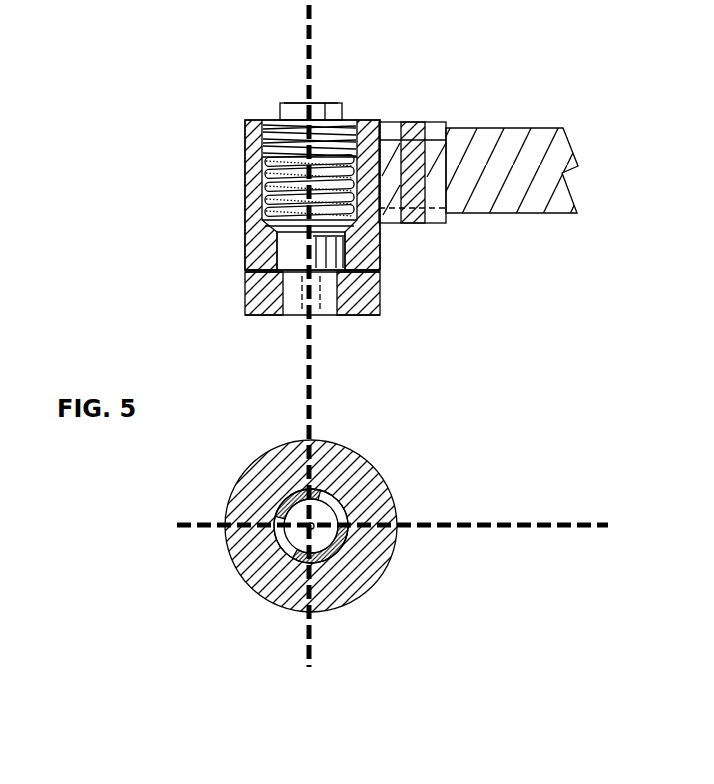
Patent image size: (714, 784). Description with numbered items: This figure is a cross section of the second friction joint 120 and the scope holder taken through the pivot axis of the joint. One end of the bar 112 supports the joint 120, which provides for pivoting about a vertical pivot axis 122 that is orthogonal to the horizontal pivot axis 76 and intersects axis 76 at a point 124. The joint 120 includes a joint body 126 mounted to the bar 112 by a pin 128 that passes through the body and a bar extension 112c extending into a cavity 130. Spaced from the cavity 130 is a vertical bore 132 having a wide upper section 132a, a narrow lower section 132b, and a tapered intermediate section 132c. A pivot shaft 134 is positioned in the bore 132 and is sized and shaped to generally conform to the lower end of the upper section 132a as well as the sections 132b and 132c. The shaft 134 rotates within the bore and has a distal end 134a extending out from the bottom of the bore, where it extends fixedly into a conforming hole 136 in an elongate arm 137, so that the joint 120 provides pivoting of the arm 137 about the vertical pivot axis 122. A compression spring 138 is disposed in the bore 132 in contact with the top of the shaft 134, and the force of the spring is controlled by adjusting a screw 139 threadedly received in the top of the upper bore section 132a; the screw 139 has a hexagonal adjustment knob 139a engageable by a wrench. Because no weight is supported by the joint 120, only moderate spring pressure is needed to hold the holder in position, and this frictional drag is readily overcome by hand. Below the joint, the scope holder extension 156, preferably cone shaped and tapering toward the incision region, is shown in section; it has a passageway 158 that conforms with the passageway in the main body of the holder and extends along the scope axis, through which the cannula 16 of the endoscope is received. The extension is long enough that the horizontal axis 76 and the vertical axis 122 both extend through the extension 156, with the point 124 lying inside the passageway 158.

The second friction joint 120 is at (138, 175).
The joint body 126 is at (242, 152).
The vertical bore 132 is at (263, 183).
The upper bore section 132a is at (258, 145).
The lower bore section 132b is at (268, 258).
The intermediate bore section 132c is at (258, 227).
The compression spring 138 is at (268, 202).
The screw 139 is at (347, 118).
The hexagonal adjustment knob 139a is at (297, 100).
The pin 128 is at (410, 123).
The shaft end block 112c is at (438, 127).
The cavity 130 is at (393, 207).
The bar 112 is at (492, 216).
The pivot shaft 134 is at (337, 261).
The distal end 134a is at (323, 300).
The conforming hole 136 is at (277, 300).
The elongate arm 137 is at (245, 290).
The scope holder extension 156 is at (362, 452).
The passageway 158 is at (350, 508).
The cannula 16 is at (278, 552).
The point 124 is at (317, 532).
The pivot axis 76 is at (465, 530).
The vertical pivot axis 122 is at (313, 648).